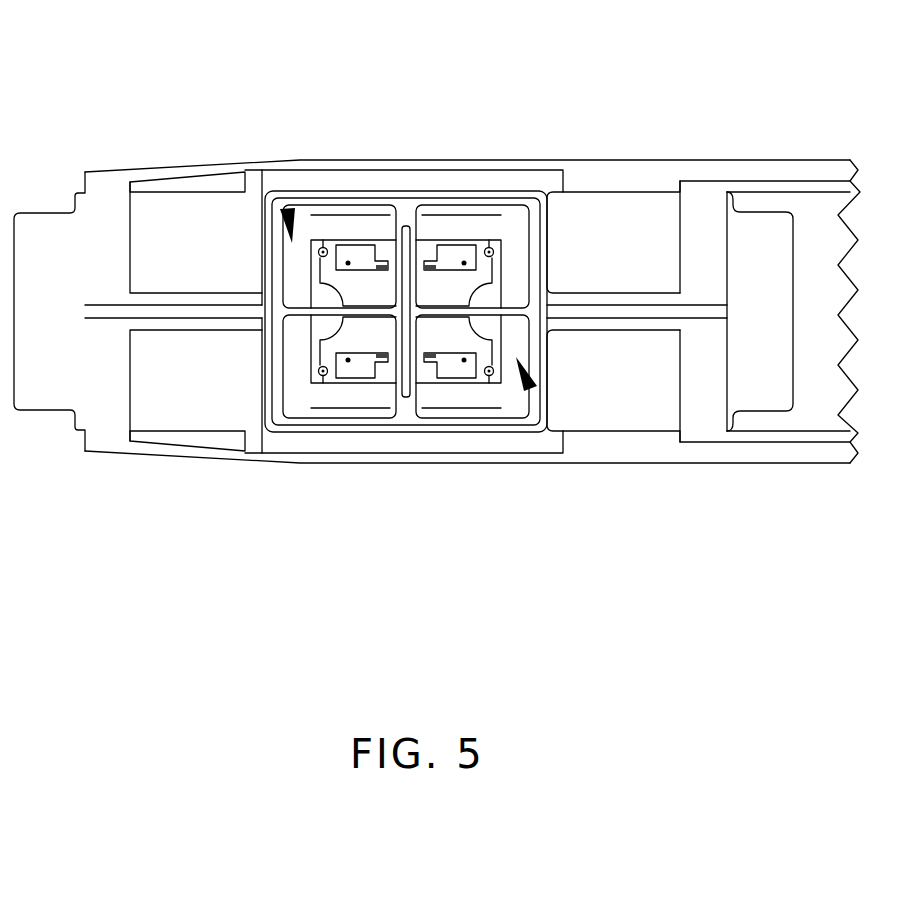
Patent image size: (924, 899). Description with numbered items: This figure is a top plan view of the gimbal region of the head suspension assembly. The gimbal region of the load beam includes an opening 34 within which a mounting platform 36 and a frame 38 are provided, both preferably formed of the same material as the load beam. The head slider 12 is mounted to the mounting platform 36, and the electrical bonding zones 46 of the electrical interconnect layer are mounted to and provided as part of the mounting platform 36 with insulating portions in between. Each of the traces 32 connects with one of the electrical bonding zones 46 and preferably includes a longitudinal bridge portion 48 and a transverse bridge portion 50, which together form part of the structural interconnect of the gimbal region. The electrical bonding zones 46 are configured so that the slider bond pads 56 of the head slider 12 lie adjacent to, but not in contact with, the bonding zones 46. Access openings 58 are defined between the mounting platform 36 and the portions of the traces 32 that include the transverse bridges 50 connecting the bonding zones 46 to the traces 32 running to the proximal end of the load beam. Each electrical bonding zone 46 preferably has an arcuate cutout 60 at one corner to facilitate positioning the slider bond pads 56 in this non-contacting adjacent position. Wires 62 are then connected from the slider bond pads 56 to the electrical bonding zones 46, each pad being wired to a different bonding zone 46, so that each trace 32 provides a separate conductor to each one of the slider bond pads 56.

The head slider 12 is at (425, 257).
The traces 32 is at (663, 162).
The opening 34 is at (157, 430).
The mounting platform 36 is at (404, 312).
The frame 38 is at (547, 312).
The electrical bonding zones 46 is at (348, 258).
The longitudinal bridge portion 48 is at (213, 295).
The transverse bridge portion 50 is at (395, 227).
The slider bond pads 56 is at (320, 248).
The access openings 58 is at (283, 208).
The arcuate cutout 60 is at (318, 255).
The wires 62 is at (348, 263).